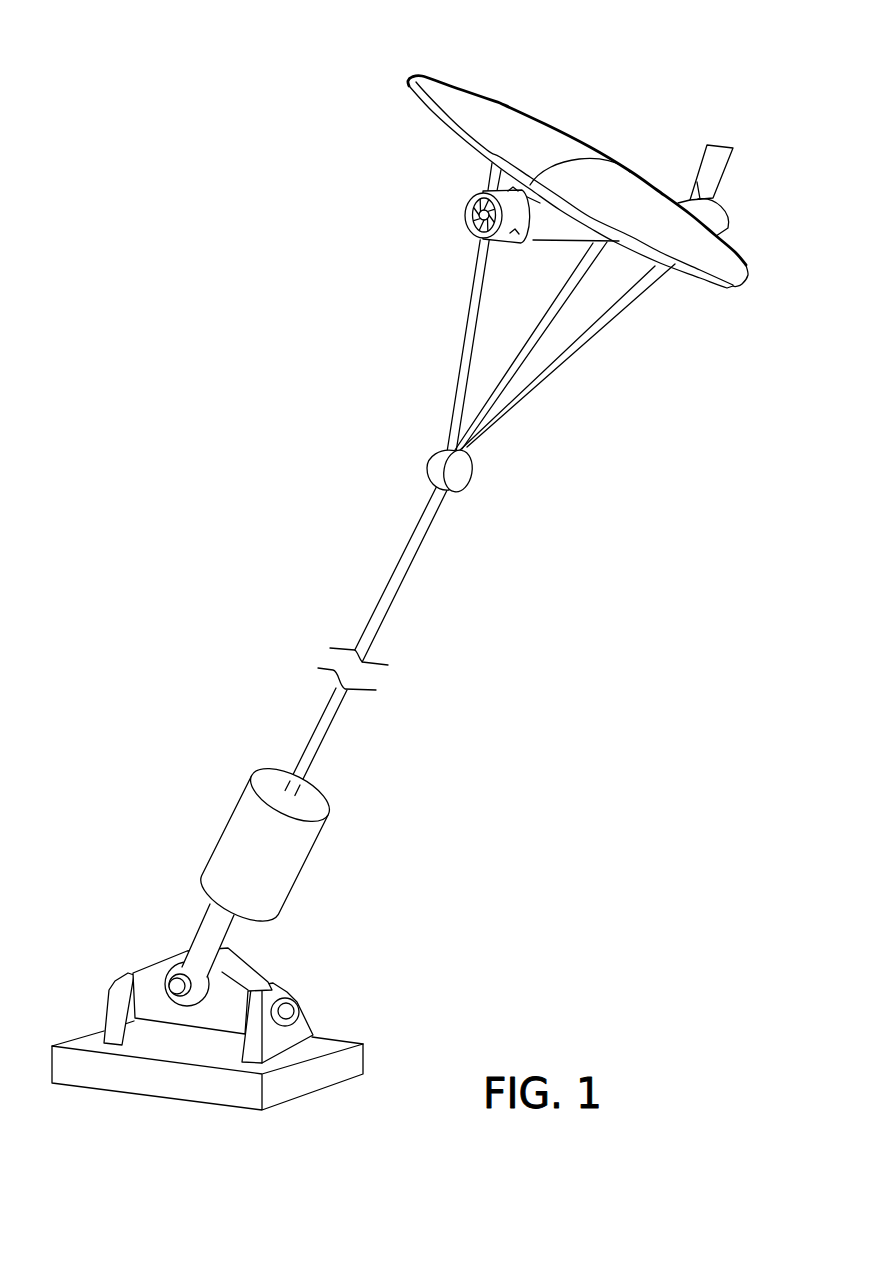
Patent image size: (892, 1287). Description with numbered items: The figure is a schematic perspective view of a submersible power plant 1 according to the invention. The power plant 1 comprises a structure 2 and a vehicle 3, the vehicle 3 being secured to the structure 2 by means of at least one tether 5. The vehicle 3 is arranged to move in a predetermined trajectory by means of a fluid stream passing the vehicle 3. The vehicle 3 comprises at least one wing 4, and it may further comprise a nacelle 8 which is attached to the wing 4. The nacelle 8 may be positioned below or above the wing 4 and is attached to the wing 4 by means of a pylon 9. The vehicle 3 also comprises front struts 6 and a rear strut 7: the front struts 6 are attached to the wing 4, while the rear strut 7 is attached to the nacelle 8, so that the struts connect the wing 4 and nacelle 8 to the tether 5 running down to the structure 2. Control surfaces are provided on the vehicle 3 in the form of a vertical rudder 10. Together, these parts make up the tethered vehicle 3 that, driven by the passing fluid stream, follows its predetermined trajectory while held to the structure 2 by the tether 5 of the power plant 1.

The submersible power plant 1 is at (441, 566).
The structure 2 is at (126, 906).
The vehicle 3 is at (612, 155).
The wing 4 is at (512, 98).
The tether 5 is at (375, 560).
The front struts 6 is at (468, 348).
The rear strut 7 is at (567, 303).
The nacelle 8 is at (560, 226).
The pylon 9 is at (607, 178).
The vertical rudder 10 is at (723, 165).